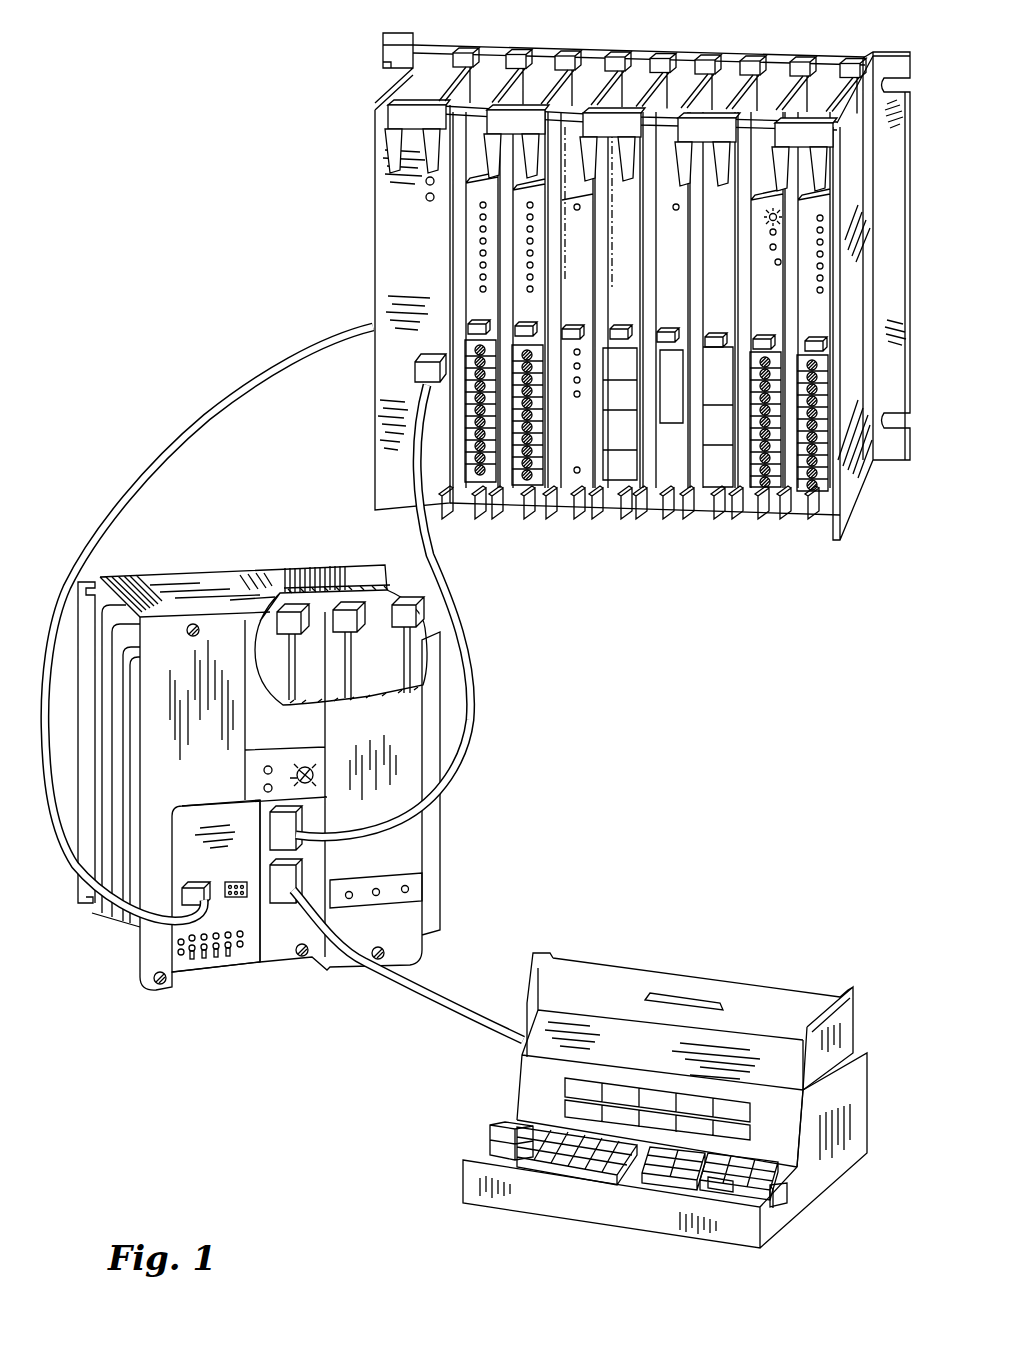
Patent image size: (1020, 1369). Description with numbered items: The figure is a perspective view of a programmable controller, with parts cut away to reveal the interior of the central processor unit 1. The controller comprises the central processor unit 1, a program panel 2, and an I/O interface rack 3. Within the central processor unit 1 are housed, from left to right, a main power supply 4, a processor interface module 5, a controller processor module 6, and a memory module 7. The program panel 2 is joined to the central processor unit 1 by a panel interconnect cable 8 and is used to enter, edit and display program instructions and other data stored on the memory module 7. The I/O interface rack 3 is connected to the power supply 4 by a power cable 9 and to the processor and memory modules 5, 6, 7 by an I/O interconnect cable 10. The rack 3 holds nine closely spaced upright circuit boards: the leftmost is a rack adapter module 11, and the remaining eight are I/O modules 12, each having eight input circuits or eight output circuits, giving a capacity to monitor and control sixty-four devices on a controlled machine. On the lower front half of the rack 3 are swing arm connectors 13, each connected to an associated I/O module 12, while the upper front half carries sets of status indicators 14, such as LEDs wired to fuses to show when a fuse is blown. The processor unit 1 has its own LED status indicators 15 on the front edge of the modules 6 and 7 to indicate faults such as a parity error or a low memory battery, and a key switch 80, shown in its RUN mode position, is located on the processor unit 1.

The central processor unit 1 is at (295, 770).
The program panel 2 is at (682, 966).
The I/O interface rack 3 is at (616, 296).
The main power supply 4 is at (217, 918).
The processor interface module 5 is at (285, 590).
The controller processor module 6 is at (314, 605).
The memory module 7 is at (397, 602).
The panel interconnect cable 8 is at (449, 1012).
The power cable 9 is at (190, 395).
The I/O interconnect cable 10 is at (481, 670).
The rack adapter module 11 is at (460, 88).
The I/O module 12 is at (618, 62).
The swing arm connector 13 is at (500, 430).
The status indicator 14 is at (847, 193).
The status indicator 15 is at (405, 886).
The key switch 80 is at (307, 765).